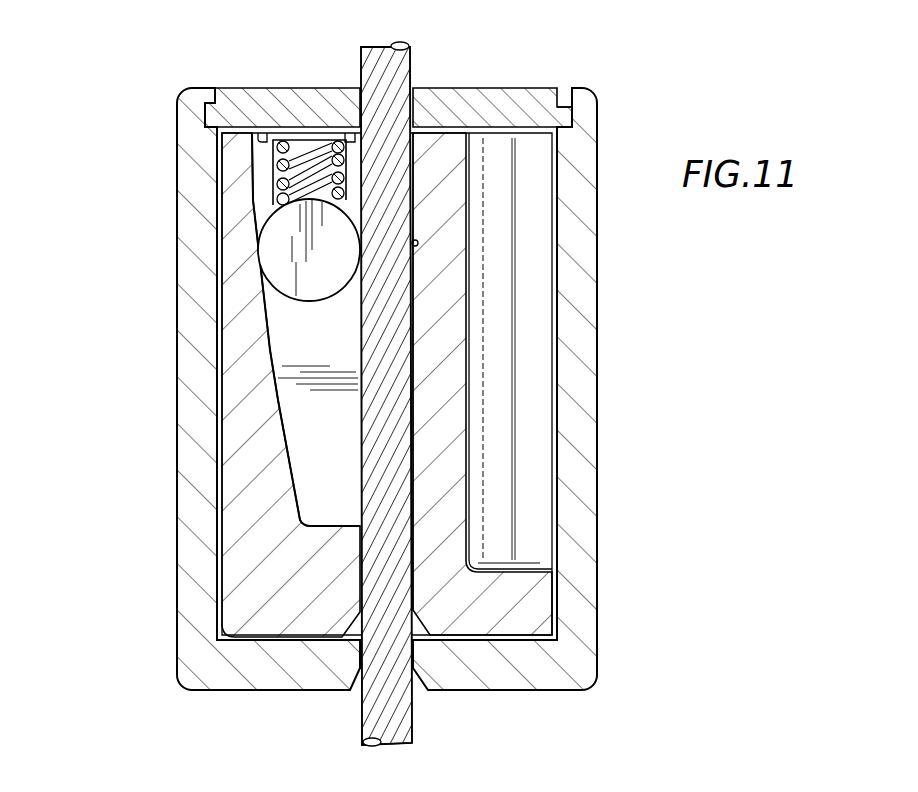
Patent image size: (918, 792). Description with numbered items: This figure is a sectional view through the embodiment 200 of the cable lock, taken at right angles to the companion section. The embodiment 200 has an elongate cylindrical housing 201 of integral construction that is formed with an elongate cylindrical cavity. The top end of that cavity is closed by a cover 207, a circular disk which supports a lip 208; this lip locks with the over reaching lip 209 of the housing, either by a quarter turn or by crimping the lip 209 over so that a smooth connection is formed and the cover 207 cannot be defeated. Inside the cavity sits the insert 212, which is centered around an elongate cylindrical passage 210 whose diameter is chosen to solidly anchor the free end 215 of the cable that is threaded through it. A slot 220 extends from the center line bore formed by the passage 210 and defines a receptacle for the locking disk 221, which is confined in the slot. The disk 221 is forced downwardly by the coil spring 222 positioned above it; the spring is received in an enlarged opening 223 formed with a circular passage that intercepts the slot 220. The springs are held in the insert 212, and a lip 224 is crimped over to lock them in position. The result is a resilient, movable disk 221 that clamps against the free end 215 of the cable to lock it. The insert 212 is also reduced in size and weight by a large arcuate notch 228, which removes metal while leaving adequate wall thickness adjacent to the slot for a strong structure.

The embodiment 200 is at (143, 83).
The housing 201 is at (598, 452).
The cover 207 is at (270, 100).
The lip 208 is at (587, 110).
The over reaching lip 209 is at (548, 98).
The passage 210 is at (418, 242).
The insert 212 is at (241, 530).
The free end of the cable 215 is at (411, 63).
The slot 220 is at (303, 408).
The locking disk 221 is at (287, 262).
The coil spring 222 is at (273, 164).
The enlarged opening 223 is at (270, 193).
The lip 224 is at (472, 642).
The arcuate notch 228 is at (531, 378).